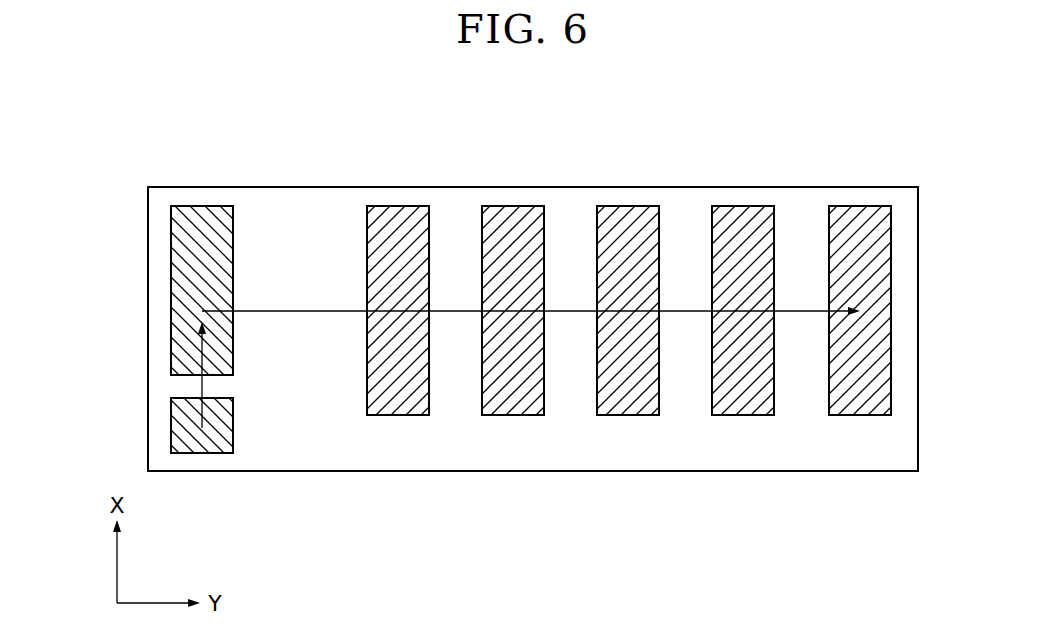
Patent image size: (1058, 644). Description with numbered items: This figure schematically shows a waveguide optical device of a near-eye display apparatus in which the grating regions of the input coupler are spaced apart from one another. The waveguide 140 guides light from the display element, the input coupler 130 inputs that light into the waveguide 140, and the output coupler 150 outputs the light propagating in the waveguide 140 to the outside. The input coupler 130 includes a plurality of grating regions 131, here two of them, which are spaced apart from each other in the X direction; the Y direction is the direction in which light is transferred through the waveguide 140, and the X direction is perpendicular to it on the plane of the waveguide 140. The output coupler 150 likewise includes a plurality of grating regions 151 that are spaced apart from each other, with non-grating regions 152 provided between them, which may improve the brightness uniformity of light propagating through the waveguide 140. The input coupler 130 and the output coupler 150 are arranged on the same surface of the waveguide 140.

The input coupler 130 is at (187, 378).
The grating regions 131 is at (177, 332).
The waveguide 140 is at (883, 458).
The output coupler 150 is at (647, 248).
The grating regions 151 is at (397, 230).
The non-grating regions 152 is at (455, 230).